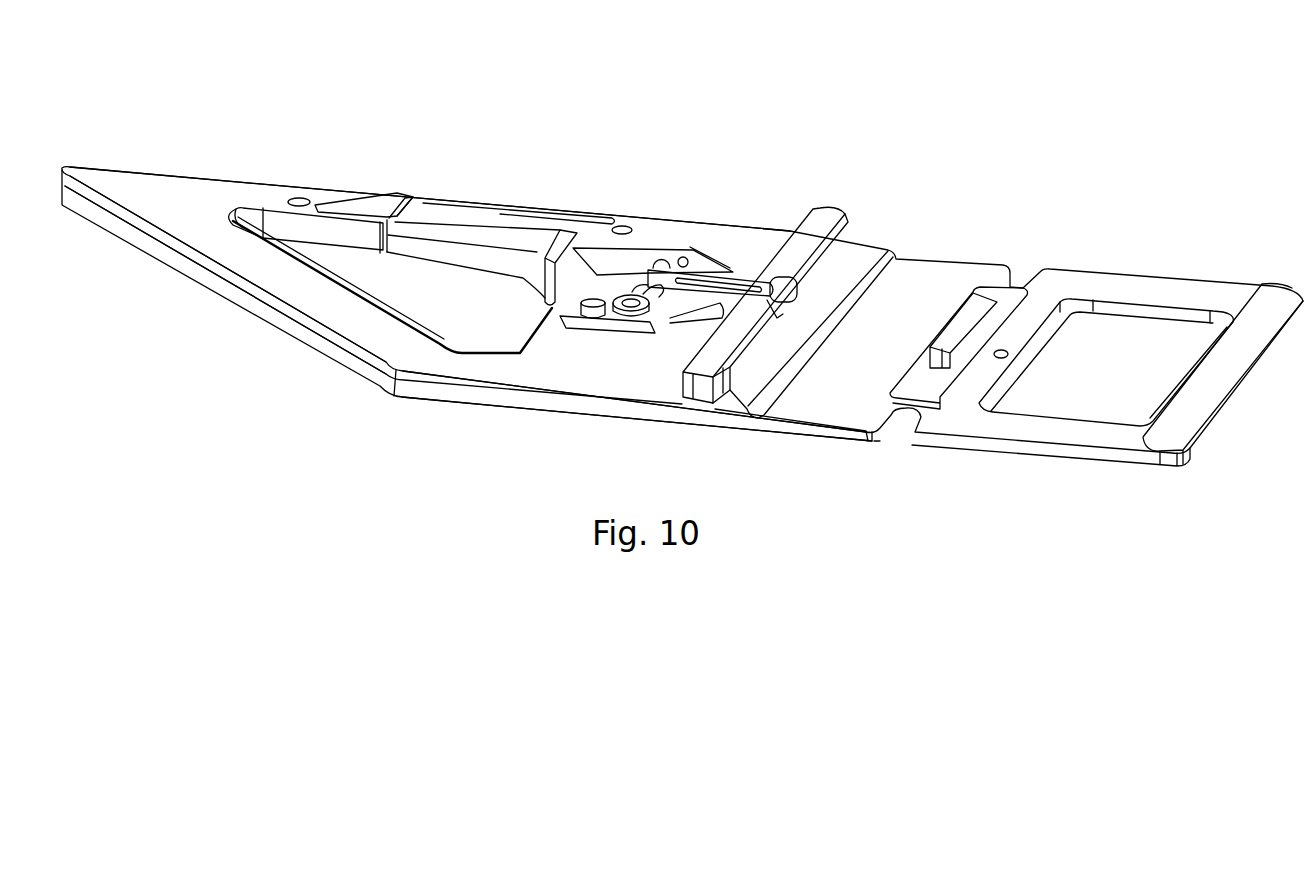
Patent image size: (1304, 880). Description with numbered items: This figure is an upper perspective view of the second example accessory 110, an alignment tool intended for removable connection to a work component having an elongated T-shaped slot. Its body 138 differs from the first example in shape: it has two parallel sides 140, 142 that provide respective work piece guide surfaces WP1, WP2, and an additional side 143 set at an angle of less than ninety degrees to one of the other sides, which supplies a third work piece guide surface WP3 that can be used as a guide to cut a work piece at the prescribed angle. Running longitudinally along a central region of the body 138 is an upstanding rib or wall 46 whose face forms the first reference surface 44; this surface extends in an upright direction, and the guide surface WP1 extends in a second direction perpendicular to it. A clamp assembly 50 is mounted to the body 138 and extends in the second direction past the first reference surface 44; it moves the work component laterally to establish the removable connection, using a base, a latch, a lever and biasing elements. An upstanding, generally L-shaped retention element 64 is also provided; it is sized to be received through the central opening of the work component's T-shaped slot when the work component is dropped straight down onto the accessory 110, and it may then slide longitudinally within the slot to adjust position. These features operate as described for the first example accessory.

The second example accessory 110 is at (781, 139).
The side 140 is at (137, 164).
The first work piece guide surface WP1 is at (218, 177).
The second work piece guide surface WP2 is at (470, 396).
The third work piece guide surface WP3 is at (321, 352).
The side 142 is at (571, 407).
The additional side 143 is at (257, 312).
The clamp assembly 50 is at (661, 232).
The upstanding rib or wall 46 is at (818, 223).
The first reference surface 44 is at (755, 337).
The retention element 64 is at (975, 313).
The body 138 is at (1125, 285).